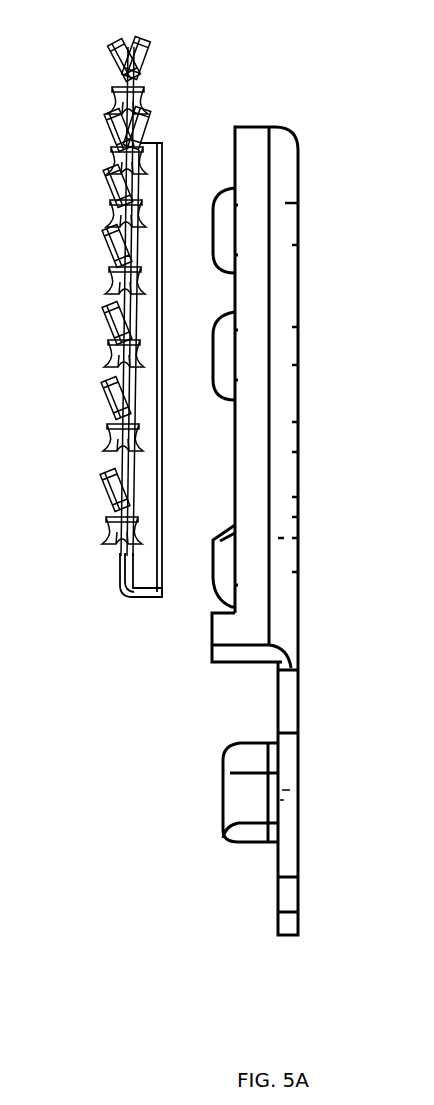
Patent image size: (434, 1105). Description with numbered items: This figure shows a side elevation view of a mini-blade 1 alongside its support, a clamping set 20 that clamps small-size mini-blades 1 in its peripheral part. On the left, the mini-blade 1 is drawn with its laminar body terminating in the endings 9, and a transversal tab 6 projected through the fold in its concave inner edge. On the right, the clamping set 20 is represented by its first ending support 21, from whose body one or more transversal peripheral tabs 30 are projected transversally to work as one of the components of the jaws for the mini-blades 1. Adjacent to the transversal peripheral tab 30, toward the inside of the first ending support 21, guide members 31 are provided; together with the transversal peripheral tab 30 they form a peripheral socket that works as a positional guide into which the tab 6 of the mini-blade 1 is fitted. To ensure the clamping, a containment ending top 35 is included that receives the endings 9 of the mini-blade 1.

The mini-blade 1 is at (95, 112).
The transversal tab 6 is at (146, 250).
The endings 9 is at (146, 602).
The clamping set 20 is at (324, 284).
The first ending support 21 is at (299, 752).
The transversal peripheral tab 30 is at (247, 137).
The guide members 31 is at (224, 214).
The containment ending top 35 is at (210, 600).